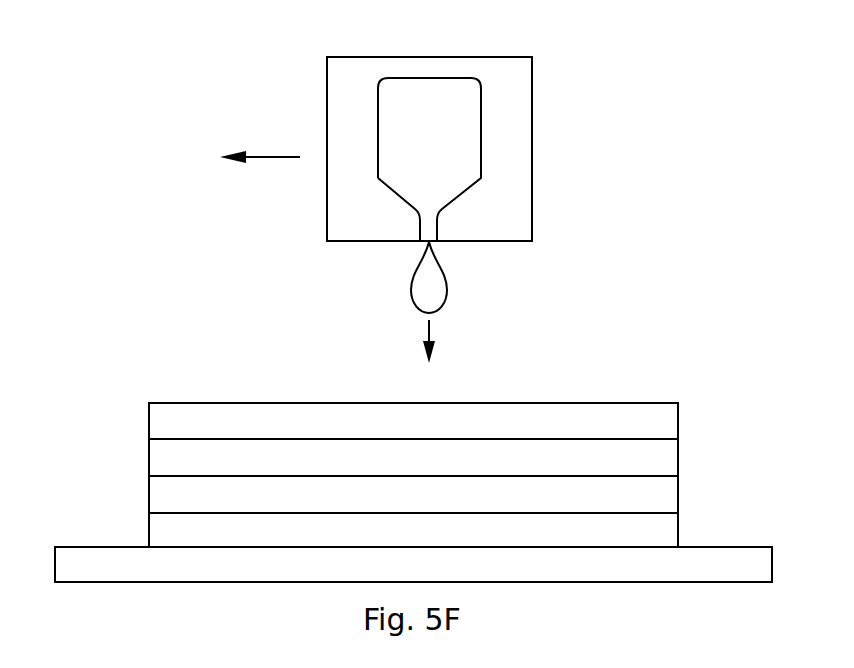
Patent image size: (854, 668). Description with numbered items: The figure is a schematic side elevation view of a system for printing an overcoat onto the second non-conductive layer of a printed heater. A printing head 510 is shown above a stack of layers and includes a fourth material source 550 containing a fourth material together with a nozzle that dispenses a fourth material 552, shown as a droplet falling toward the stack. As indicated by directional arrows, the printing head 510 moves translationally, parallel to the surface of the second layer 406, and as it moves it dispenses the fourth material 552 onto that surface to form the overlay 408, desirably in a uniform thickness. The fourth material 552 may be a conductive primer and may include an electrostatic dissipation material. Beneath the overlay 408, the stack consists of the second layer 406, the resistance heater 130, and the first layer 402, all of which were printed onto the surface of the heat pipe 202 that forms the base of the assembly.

The printing head 510 is at (556, 68).
The fourth material source 550 is at (429, 159).
The fourth material 552 is at (468, 287).
The overcoat 408 is at (413, 421).
The second layer 406 is at (413, 457).
The resistance heater 130 is at (413, 494).
The first layer 402 is at (413, 530).
The heat pipe 202 is at (413, 564).